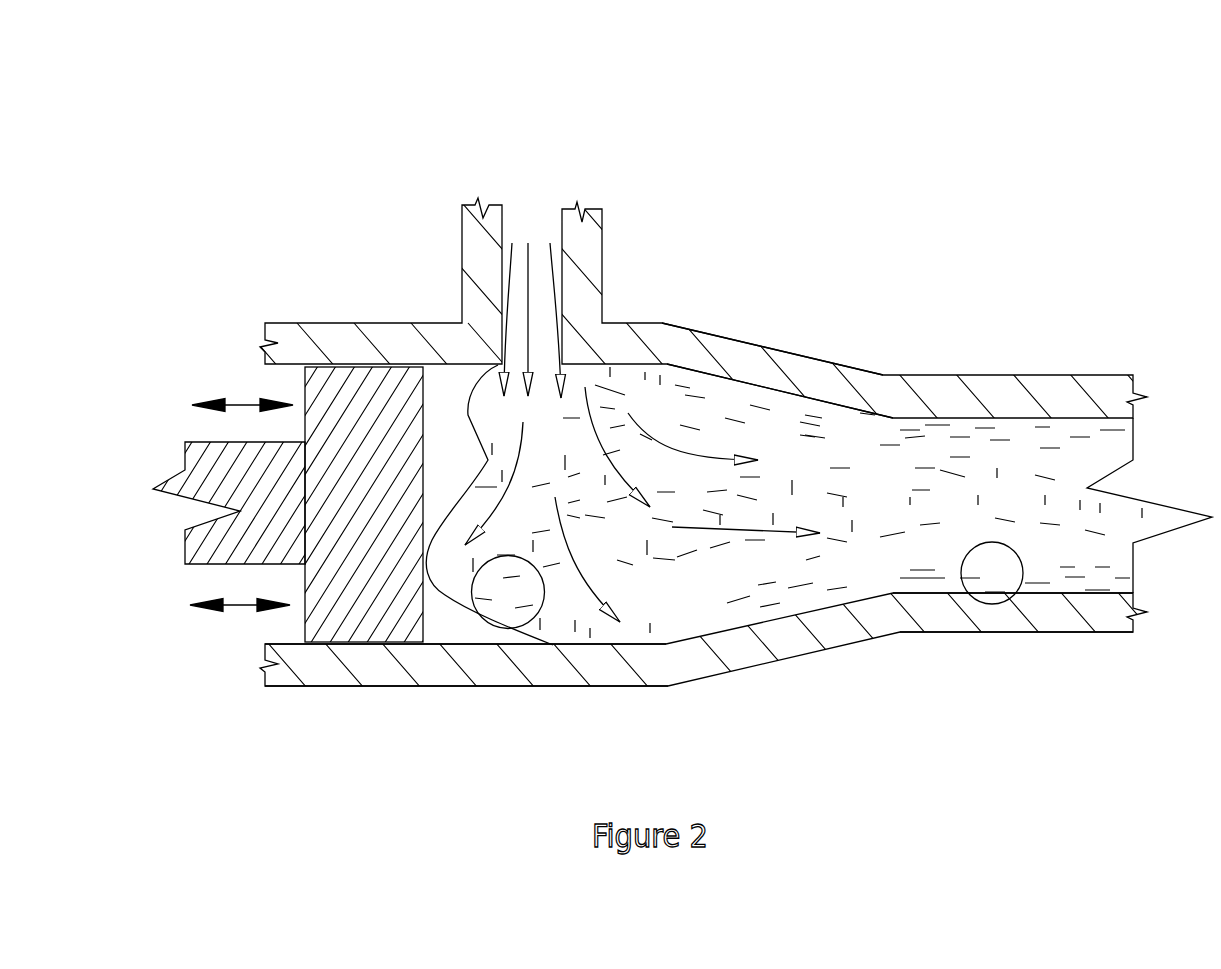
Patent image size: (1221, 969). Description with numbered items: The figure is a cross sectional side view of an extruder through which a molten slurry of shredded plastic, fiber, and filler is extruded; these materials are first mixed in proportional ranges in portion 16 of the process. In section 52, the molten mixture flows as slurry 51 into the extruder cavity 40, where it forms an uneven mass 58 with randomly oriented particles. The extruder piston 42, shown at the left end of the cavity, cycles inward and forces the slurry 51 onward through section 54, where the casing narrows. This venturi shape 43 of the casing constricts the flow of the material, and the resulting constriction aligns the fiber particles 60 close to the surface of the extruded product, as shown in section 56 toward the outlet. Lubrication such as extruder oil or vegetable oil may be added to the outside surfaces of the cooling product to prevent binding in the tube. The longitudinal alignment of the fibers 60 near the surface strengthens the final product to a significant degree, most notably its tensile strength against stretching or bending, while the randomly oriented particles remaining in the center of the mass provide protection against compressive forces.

The portion 16 is at (897, 140).
The extruder cavity 40 is at (588, 243).
The extruder piston 42 is at (187, 534).
The venturi shape 43 is at (888, 272).
The slurry 51 is at (502, 278).
The section 52 is at (427, 703).
The section 54 is at (667, 315).
The section 56 is at (900, 660).
The uneven mass 58 is at (482, 618).
The fiber particles 60 is at (1007, 597).